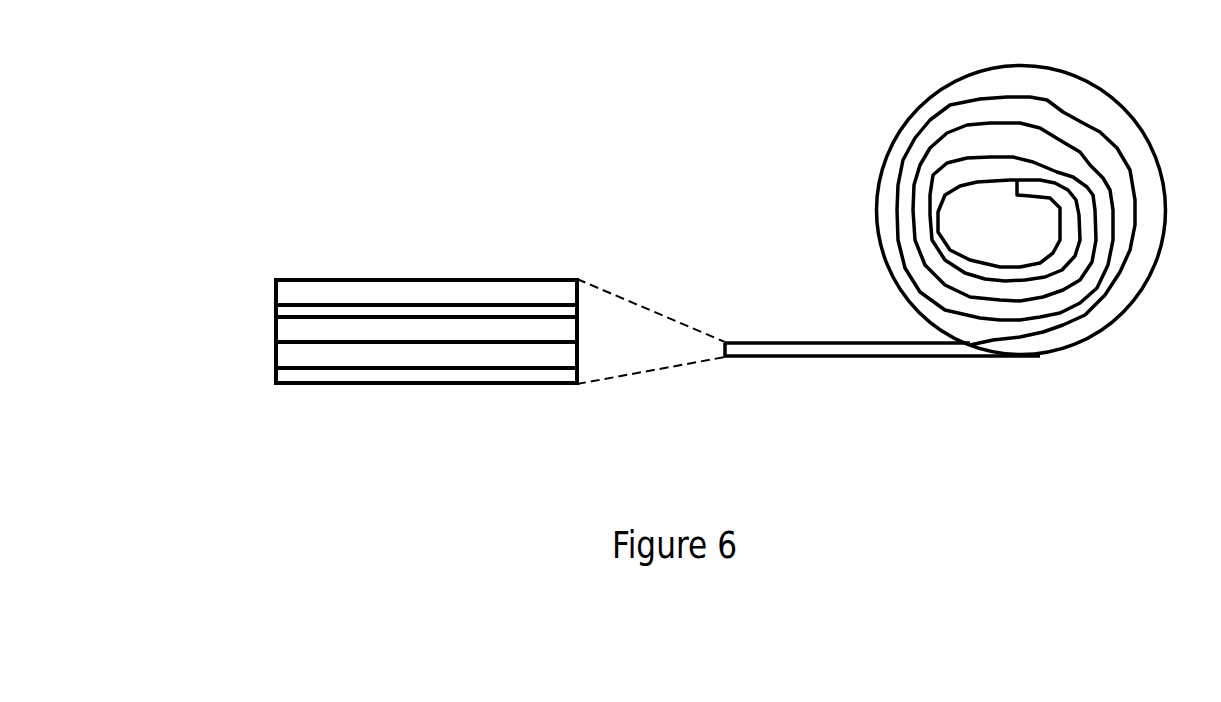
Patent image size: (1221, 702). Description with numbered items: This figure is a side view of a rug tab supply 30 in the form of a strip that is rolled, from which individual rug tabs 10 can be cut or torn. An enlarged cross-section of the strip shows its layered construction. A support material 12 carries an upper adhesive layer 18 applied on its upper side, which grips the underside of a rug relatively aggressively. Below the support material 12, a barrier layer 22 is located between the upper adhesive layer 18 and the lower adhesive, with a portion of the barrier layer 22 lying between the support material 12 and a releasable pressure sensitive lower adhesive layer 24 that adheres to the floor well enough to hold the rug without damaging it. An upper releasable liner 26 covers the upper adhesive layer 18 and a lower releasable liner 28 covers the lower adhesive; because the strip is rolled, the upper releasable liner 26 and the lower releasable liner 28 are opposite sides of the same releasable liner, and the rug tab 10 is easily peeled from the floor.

The rug tab 10 is at (1105, 90).
The rug tab supply 30 is at (766, 117).
The upper adhesive layer 18 is at (305, 289).
The support material 12 is at (323, 311).
The barrier layer 22 is at (300, 333).
The releasable pressure sensitive lower adhesive layer 24 is at (297, 355).
The upper releasable liner 26 is at (397, 365).
The lower releasable liner 28 is at (325, 382).